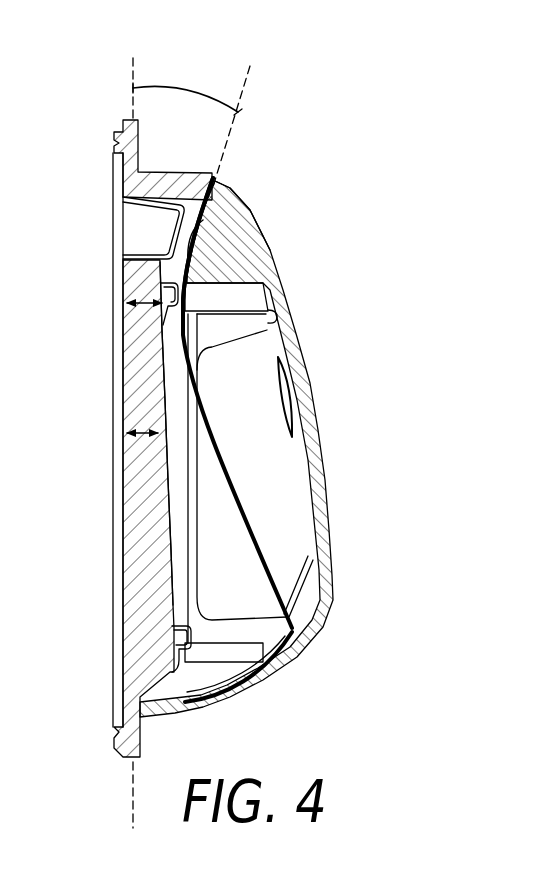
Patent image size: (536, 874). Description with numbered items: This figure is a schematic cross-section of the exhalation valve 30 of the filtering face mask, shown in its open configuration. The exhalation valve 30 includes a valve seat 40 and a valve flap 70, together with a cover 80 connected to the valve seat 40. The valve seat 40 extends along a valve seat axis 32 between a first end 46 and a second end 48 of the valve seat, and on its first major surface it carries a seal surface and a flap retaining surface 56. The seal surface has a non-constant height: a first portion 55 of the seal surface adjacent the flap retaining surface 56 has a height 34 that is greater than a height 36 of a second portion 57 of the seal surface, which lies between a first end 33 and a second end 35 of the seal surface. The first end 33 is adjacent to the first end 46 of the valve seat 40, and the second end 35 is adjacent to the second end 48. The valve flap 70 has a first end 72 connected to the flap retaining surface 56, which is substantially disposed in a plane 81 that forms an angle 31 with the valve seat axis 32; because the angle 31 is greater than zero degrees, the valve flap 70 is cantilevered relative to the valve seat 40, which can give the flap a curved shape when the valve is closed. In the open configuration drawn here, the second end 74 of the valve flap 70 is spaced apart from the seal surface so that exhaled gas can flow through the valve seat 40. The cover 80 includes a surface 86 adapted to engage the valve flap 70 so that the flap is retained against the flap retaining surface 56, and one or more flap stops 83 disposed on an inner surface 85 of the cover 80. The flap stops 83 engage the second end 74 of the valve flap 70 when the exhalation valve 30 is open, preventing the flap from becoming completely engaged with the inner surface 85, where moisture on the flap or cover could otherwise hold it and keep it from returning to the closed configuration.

The exhalation valve 30 is at (332, 117).
The angle 31 is at (200, 90).
The valve seat axis 32 is at (136, 66).
The first end of the seal surface 33 is at (162, 296).
The height of the first portion of the seal surface 34 is at (150, 299).
The second end of the seal surface 35 is at (177, 649).
The height of the second portion of the seal surface 36 is at (142, 430).
The valve seat 40 is at (130, 511).
The first end of the valve seat 46 is at (128, 120).
The second end of the valve seat 48 is at (130, 760).
The first portion of the seal surface 55 is at (170, 306).
The flap retaining surface 56 is at (203, 195).
The second portion of the seal surface 57 is at (160, 466).
The valve flap 70 is at (240, 479).
The first end of the valve flap 72 is at (218, 184).
The second end of the valve flap 74 is at (298, 627).
The cover 80 is at (312, 382).
The plane 81 is at (248, 93).
The flap stop 83 is at (298, 591).
The inner surface of the cover 85 is at (273, 323).
The surface of the cover 86 is at (190, 258).